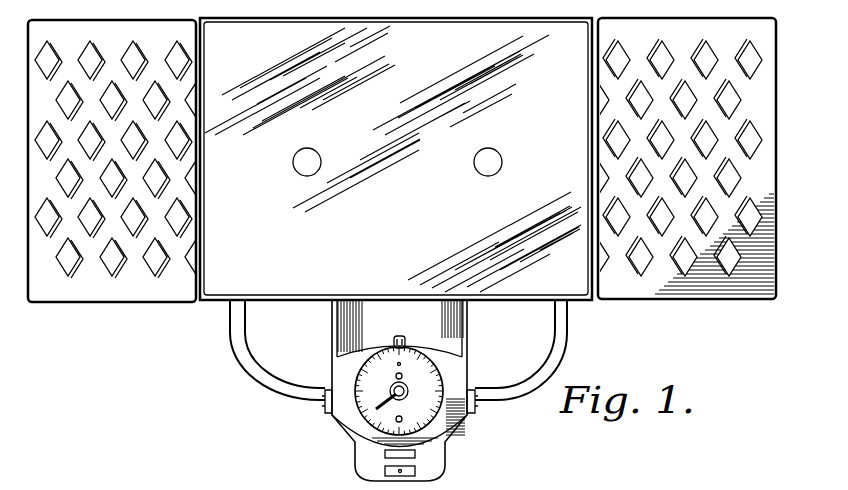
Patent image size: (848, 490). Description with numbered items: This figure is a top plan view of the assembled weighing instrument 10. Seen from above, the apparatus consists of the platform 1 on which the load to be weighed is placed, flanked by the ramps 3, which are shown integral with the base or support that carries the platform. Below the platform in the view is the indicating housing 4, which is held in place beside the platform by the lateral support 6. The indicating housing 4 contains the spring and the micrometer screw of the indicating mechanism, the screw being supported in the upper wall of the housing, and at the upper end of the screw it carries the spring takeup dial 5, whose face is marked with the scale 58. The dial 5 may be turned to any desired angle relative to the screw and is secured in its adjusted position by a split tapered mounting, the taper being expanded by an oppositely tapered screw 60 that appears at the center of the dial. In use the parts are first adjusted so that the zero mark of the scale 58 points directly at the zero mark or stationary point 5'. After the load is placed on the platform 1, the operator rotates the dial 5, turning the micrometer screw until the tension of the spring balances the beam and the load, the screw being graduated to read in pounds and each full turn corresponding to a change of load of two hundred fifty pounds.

The platform 1 is at (563, 31).
The ramps 3 is at (135, 302).
The indicating housing 4 is at (337, 357).
The spring takeup dial 5 is at (431, 391).
The stationary point 5' is at (450, 327).
The lateral support 6 is at (567, 333).
The weighing instrument 10 is at (678, 300).
The scale 58 is at (380, 406).
The oppositely tapered screw 60 is at (391, 400).